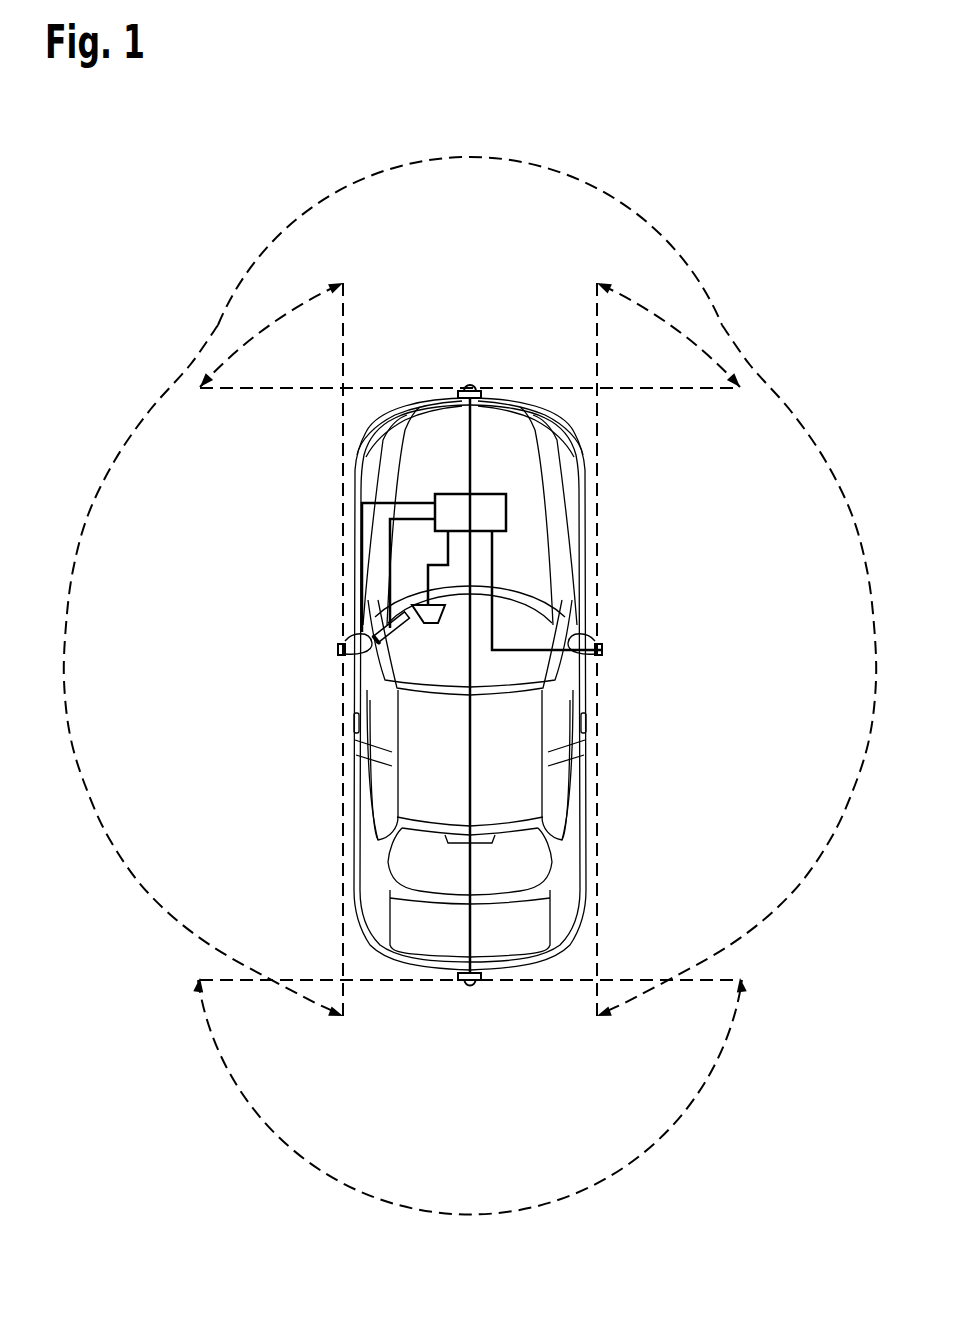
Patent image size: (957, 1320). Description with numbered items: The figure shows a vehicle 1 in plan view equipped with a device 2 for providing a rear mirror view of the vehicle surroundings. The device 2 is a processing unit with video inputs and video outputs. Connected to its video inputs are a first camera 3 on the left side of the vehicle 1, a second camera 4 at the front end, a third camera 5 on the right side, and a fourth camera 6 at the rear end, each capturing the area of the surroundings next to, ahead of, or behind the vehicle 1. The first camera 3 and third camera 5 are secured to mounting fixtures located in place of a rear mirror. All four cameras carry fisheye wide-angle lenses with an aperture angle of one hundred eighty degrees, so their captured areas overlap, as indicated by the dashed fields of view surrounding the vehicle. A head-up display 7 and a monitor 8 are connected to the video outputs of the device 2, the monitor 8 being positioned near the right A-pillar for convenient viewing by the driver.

The vehicle 1 is at (333, 463).
The device 2 is at (506, 512).
The first camera 3 is at (338, 650).
The second camera 4 is at (470, 385).
The third camera 5 is at (602, 650).
The fourth camera 6 is at (470, 986).
The head-up display 7 is at (428, 623).
The monitor 8 is at (376, 630).